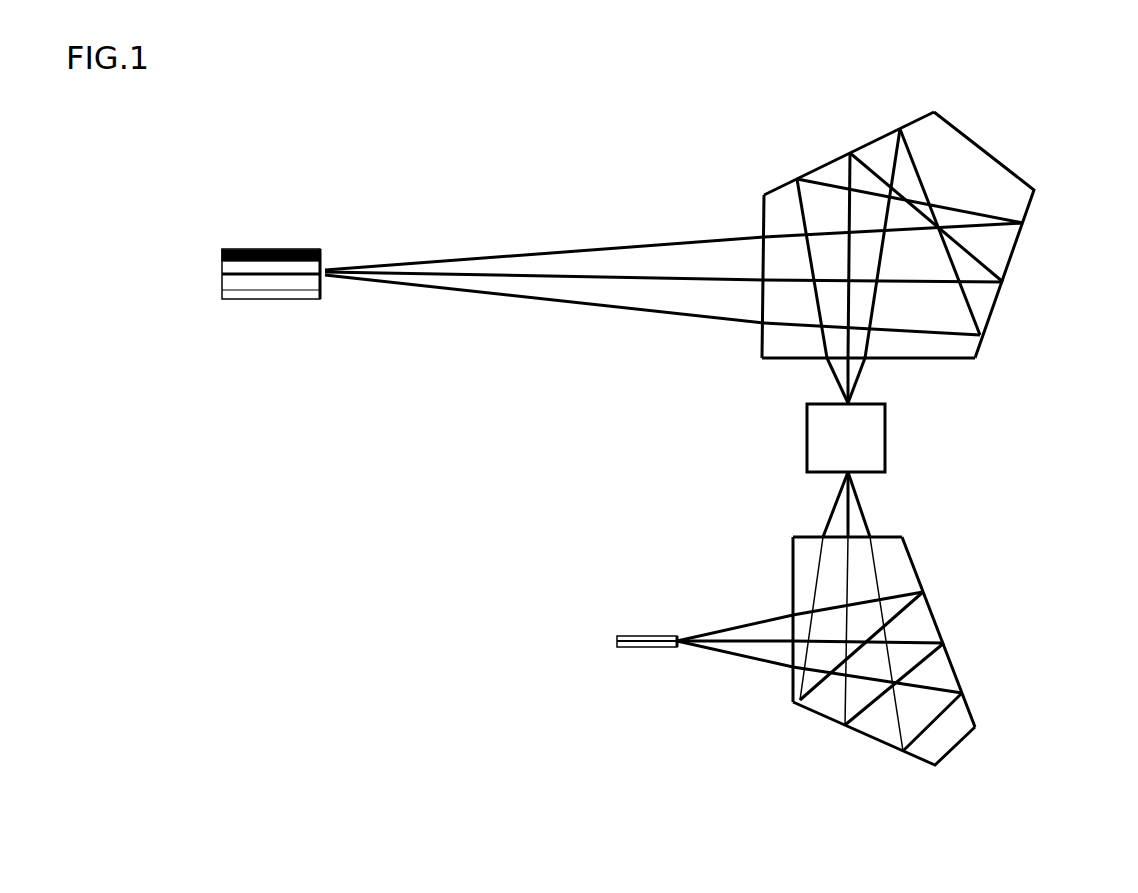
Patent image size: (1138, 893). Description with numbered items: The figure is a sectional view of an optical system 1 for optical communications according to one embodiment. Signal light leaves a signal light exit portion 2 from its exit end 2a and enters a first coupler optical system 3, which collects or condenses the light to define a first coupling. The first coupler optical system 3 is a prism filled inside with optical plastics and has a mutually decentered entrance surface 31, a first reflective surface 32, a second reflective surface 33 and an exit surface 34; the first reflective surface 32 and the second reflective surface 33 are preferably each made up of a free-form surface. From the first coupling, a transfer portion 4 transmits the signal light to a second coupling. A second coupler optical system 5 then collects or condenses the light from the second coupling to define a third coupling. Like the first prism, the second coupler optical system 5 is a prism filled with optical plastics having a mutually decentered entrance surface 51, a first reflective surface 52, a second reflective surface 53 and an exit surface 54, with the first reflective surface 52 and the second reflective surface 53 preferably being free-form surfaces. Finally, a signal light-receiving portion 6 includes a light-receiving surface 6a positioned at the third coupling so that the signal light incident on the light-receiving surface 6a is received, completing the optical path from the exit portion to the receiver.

The optical system for optical communications 1 is at (1076, 126).
The signal light exit portion 2 is at (666, 615).
The exit end 2a is at (703, 665).
The first coupler optical system 3 is at (859, 604).
The entrance surface 31 is at (790, 590).
The first reflective surface 32 is at (962, 670).
The second reflective surface 33 is at (818, 718).
The exit surface 34 is at (895, 537).
The transfer portion 4 is at (898, 438).
The second coupler optical system 5 is at (700, 236).
The entrance surface 51 is at (785, 360).
The first reflective surface 52 is at (921, 112).
The second reflective surface 53 is at (997, 315).
The exit surface 54 is at (763, 213).
The signal light-receiving portion 6 is at (295, 246).
The light-receiving surface 6a is at (320, 292).